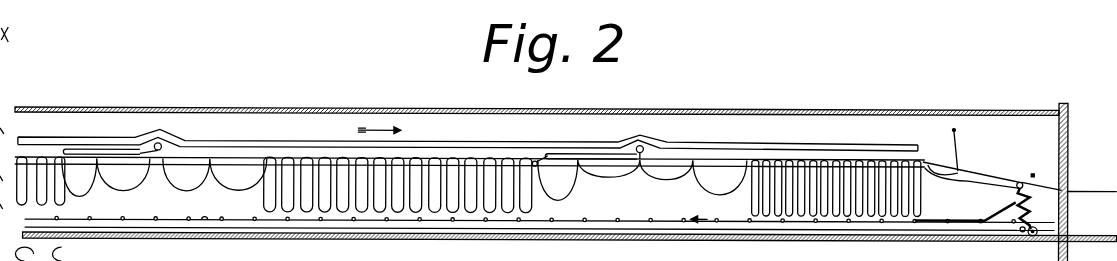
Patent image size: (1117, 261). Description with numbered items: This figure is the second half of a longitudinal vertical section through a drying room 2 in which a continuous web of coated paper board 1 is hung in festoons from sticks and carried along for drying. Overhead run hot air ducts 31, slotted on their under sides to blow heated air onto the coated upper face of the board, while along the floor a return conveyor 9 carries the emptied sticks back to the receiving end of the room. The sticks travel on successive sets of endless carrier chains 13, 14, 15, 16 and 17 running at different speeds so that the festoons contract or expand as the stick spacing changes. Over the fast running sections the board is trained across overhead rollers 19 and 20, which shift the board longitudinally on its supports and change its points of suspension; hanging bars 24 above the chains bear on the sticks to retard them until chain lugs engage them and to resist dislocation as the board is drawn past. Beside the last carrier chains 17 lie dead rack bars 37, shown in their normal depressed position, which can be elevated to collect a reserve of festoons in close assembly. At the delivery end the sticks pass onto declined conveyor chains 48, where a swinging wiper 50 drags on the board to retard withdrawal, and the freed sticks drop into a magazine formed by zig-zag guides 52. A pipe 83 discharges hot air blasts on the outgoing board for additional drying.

The web of material 1 is at (1102, 188).
The drying room 2 is at (307, 109).
The return conveyor 9 is at (208, 222).
The endless chains 13 is at (31, 157).
The endless chains 14 is at (150, 166).
The endless chains 15 is at (442, 157).
The endless chains 16 is at (640, 166).
The endless chains 17 is at (786, 157).
The overhead roller 19 is at (165, 141).
The overhead roller 20 is at (645, 141).
The hanging bars 24 is at (76, 152).
The hot air ducts 31 is at (257, 137).
The dead rack bars 37 is at (862, 160).
The declined conveyor chains 48 is at (990, 174).
The swinging wiper 50 is at (955, 171).
The magazine guides 52 is at (1037, 199).
The hot air pipe 83 is at (1033, 170).